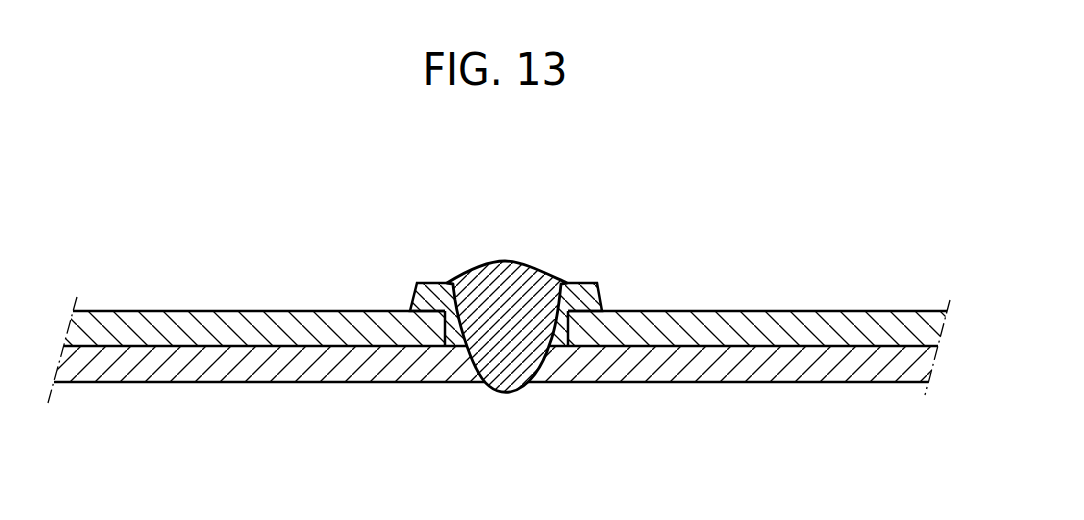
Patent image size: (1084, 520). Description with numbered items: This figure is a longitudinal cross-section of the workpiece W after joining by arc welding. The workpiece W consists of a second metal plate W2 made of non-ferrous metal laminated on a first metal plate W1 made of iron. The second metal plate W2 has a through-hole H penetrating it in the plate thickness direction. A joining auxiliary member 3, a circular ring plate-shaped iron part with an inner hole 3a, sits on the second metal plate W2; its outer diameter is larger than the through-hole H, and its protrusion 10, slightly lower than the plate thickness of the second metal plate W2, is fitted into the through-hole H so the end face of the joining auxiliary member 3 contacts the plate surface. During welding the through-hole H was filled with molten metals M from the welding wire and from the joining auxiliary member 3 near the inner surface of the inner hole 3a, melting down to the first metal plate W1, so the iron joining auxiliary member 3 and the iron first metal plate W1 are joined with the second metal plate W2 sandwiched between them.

The workpiece W is at (499, 296).
The first metal plate W1 is at (252, 347).
The second metal plate W2 is at (303, 312).
The joining auxiliary member 3 is at (498, 310).
The inner hole 3a is at (553, 322).
The molten metals M is at (521, 261).
The through-hole H is at (447, 330).
The protrusion 10 is at (568, 328).